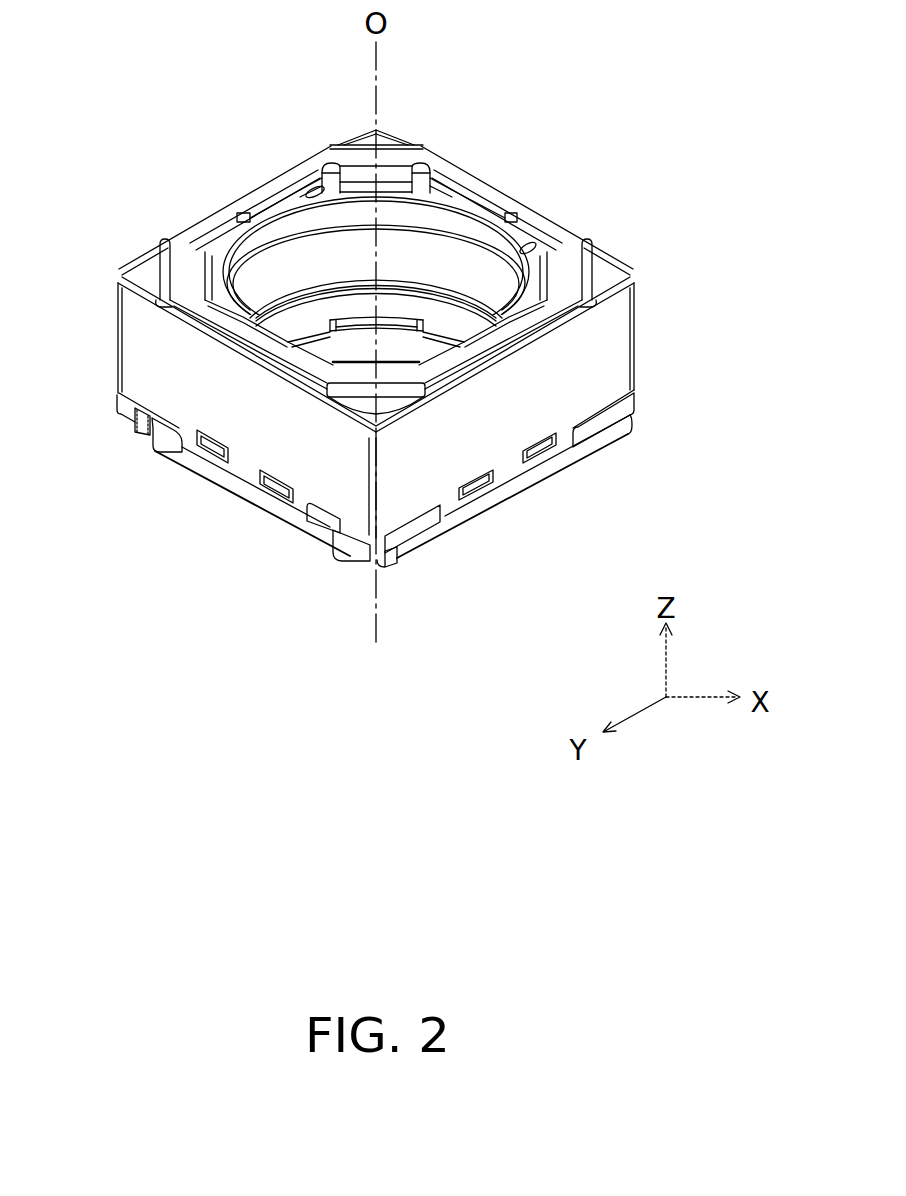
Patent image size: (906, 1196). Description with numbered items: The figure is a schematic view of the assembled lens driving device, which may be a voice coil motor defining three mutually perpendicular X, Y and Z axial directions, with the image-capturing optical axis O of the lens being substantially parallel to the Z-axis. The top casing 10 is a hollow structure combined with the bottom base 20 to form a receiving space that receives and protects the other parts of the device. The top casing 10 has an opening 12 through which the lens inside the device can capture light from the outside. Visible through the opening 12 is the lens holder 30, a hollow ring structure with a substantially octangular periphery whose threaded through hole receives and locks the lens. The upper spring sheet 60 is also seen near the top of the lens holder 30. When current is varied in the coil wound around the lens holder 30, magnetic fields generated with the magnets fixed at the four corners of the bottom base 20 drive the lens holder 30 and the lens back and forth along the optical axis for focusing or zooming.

The top casing 10 is at (117, 334).
The opening 12 is at (222, 227).
The bottom base 20 is at (246, 501).
The lens holder 30 is at (473, 237).
The upper spring sheet 60 is at (517, 243).